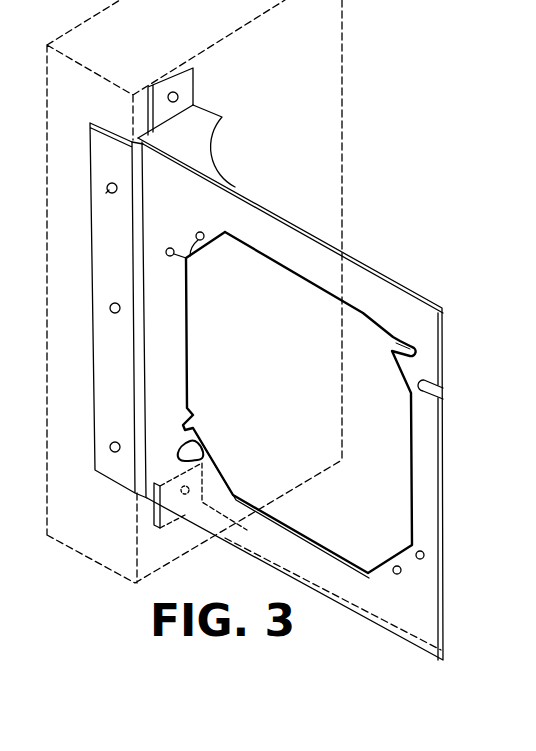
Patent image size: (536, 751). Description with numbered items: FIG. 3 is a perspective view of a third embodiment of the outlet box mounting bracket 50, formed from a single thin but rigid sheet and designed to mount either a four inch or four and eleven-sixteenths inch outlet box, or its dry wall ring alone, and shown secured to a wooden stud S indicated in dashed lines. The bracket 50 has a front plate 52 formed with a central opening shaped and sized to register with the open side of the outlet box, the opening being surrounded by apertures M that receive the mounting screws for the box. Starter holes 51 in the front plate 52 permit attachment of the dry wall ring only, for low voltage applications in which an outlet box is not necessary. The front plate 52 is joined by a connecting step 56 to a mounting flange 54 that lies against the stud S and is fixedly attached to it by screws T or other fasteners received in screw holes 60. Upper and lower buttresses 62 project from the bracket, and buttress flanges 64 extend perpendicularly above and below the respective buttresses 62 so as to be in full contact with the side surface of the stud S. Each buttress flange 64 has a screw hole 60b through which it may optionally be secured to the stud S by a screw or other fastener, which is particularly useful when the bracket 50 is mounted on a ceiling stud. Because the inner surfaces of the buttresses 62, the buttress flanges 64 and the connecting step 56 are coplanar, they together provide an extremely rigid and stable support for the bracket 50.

The stud S is at (43, 66).
The screws T is at (105, 195).
The mounting bracket 50 is at (347, 249).
The starter holes 51 is at (190, 259).
The front plate 52 is at (317, 272).
The mounting flange 54 is at (100, 343).
The connecting step 56 is at (137, 137).
The screw holes 60 is at (106, 189).
The screw hole 60b is at (170, 93).
The buttresses 62 is at (210, 117).
The buttress flanges 64 is at (185, 67).
The apertures M is at (394, 340).